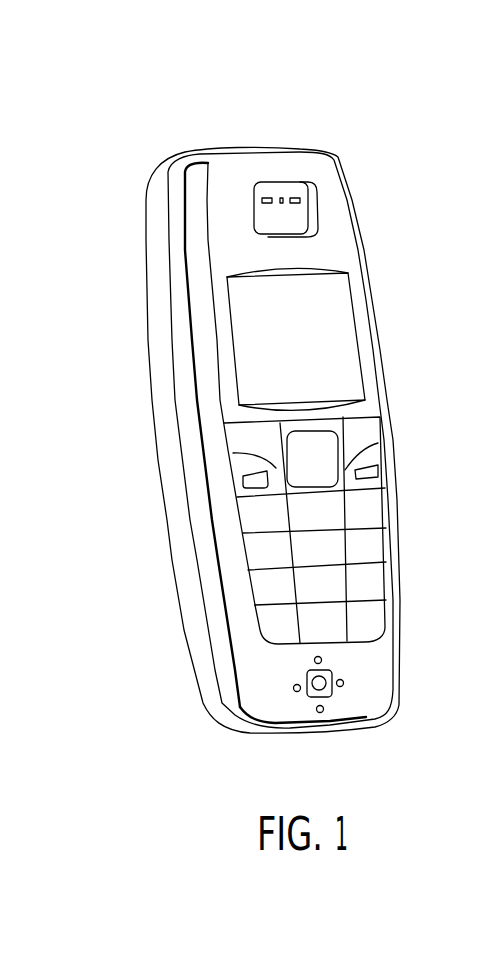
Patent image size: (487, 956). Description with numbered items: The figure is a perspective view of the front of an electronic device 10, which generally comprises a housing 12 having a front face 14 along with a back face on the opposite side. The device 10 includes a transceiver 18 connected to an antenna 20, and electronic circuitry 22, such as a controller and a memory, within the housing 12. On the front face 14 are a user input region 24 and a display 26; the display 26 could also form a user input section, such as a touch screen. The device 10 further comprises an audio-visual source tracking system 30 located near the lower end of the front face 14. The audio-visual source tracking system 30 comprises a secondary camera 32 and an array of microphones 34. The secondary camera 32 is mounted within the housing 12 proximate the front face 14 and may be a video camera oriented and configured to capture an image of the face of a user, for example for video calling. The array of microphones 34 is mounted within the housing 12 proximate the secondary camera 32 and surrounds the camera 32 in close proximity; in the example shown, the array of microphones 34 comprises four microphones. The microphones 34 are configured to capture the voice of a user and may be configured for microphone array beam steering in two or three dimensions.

The device 10 is at (140, 113).
The housing 12 is at (147, 217).
The front face 14 is at (228, 172).
The transceiver 18 is at (328, 227).
The antenna 20 is at (313, 178).
The electronic circuitry 22 is at (367, 413).
The user input region 24 is at (402, 408).
The display 26 is at (250, 330).
The audio-visual source tracking system 30 is at (286, 668).
The secondary camera 32 is at (332, 692).
The array of microphones 34 is at (297, 692).